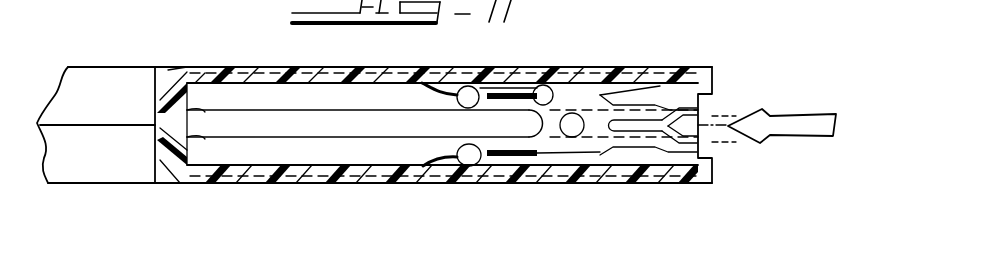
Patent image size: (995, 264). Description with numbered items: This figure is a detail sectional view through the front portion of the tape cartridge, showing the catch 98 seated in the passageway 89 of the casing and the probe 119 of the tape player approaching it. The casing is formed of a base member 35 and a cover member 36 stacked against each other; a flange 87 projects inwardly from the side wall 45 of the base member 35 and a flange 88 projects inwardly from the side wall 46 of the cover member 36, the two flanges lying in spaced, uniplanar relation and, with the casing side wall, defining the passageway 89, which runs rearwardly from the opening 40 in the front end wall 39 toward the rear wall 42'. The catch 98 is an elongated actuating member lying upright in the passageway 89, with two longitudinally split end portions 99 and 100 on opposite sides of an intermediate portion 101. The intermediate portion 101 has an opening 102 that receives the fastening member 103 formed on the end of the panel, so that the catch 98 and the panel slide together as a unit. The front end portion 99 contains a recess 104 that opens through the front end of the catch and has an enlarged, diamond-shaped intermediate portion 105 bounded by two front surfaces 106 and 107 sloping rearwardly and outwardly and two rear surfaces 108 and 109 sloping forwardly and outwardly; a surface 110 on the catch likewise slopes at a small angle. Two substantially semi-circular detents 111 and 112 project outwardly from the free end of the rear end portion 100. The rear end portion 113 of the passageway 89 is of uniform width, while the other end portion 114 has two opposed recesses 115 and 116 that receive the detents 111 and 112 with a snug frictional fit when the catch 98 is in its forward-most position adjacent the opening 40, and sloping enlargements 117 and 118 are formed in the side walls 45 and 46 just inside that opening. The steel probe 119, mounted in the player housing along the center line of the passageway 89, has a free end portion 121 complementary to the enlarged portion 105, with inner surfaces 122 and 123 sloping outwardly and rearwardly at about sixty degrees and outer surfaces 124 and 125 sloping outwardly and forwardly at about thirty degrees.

The base member 35 is at (357, 183).
The cover member 36 is at (500, 67).
The front end wall 39 is at (695, 100).
The opening 40 is at (708, 157).
The cable strain relief 42' is at (168, 110).
The side wall 45 is at (440, 183).
The side wall 46 is at (357, 67).
The flange 87 is at (205, 136).
The flange 88 is at (200, 110).
The passageway 89 is at (294, 158).
The catch 98 is at (572, 137).
The end portion 99 is at (693, 170).
The end portion 100 is at (458, 105).
The intermediate portion 101 is at (547, 128).
The opening 102 is at (603, 100).
The fastening member 103 is at (573, 152).
The recess 104 is at (628, 135).
The enlarged intermediate portion 105 is at (672, 108).
The front surface 106 is at (708, 110).
The front surface 107 is at (705, 175).
The rear surface 108 is at (700, 92).
The rear surface 109 is at (678, 165).
The surface 110 is at (640, 100).
The detent 111 is at (478, 166).
The detent 112 is at (470, 86).
The rear end portion 113 is at (243, 95).
The end portion 114 is at (573, 60).
The recess 115 is at (458, 148).
The recess 116 is at (465, 88).
The enlargement 117 is at (640, 165).
The enlargement 118 is at (627, 92).
The probe 119 is at (827, 128).
The free end portion 121 is at (750, 127).
The sloping surface 122 is at (762, 143).
The sloping surface 123 is at (760, 112).
The sloping surface 124 is at (747, 147).
The sloping surface 125 is at (742, 118).